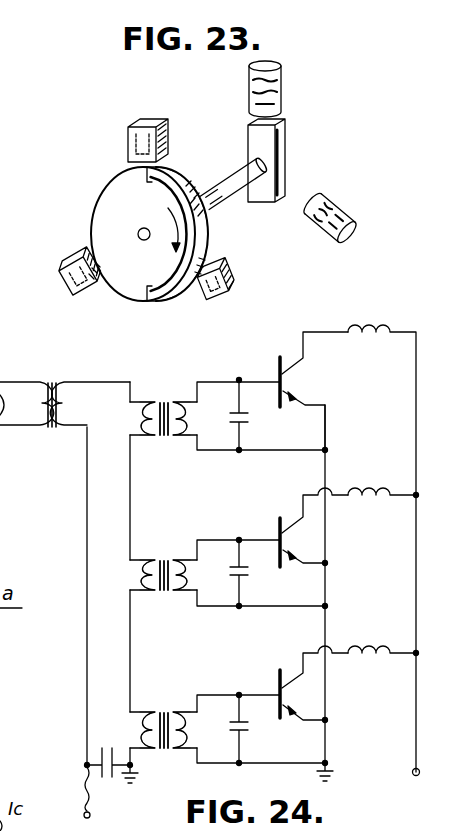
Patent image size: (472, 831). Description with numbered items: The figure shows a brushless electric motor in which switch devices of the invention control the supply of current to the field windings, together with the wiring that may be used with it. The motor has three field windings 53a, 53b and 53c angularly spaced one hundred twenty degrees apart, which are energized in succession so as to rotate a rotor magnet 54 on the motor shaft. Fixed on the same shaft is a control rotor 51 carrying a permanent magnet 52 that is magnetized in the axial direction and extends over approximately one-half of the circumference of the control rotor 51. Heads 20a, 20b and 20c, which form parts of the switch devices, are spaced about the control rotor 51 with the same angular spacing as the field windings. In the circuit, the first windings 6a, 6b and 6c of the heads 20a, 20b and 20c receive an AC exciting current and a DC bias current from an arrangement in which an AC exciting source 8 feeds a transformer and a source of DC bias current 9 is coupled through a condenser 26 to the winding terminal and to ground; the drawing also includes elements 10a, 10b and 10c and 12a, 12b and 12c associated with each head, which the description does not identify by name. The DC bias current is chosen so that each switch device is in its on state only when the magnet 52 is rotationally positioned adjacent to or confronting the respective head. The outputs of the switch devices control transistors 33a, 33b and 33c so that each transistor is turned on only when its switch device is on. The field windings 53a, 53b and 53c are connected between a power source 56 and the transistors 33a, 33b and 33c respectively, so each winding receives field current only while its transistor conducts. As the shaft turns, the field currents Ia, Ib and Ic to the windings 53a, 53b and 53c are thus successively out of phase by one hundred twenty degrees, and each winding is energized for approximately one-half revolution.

In FIG. 24, the AC exciting source 8 is at (65, 388).
In FIG. 24, the source of DC bias current 9 is at (90, 816).
In FIG. 24, the first winding 6a is at (146, 436).
In FIG. 24, the first winding 6b is at (147, 592).
In FIG. 24, the first winding 6c is at (146, 750).
In FIG. 24, the secondary winding 10a is at (184, 437).
In FIG. 24, the secondary winding 10b is at (185, 592).
In FIG. 24, the secondary winding 10c is at (190, 715).
In FIG. 24, the capacitor 12a is at (254, 425).
In FIG. 24, the capacitor 12b is at (254, 580).
In FIG. 24, the capacitor 12c is at (254, 737).
In FIG. 23, the head 20a is at (176, 112).
In FIG. 24, the head 20a is at (165, 402).
In FIG. 23, the head 20b is at (238, 292).
In FIG. 24, the head 20b is at (165, 560).
In FIG. 23, the head 20c is at (64, 295).
In FIG. 24, the head 20c is at (165, 712).
In FIG. 24, the condenser 26 is at (110, 748).
In FIG. 24, the transistor 33a is at (297, 375).
In FIG. 24, the transistor 33b is at (287, 516).
In FIG. 24, the transistor 33c is at (281, 671).
In FIG. 23, the control rotor 51 is at (102, 212).
In FIG. 23, the permanent magnet 52 is at (206, 250).
In FIG. 23, the field winding 53a is at (284, 96).
In FIG. 24, the field winding 53a is at (384, 327).
In FIG. 23, the field winding 53b is at (344, 216).
In FIG. 24, the field winding 53b is at (382, 490).
In FIG. 23, the field winding 53c is at (212, 174).
In FIG. 24, the field winding 53c is at (382, 650).
In FIG. 23, the rotor magnet 54 is at (285, 160).
In FIG. 24, the power source 56 is at (412, 773).